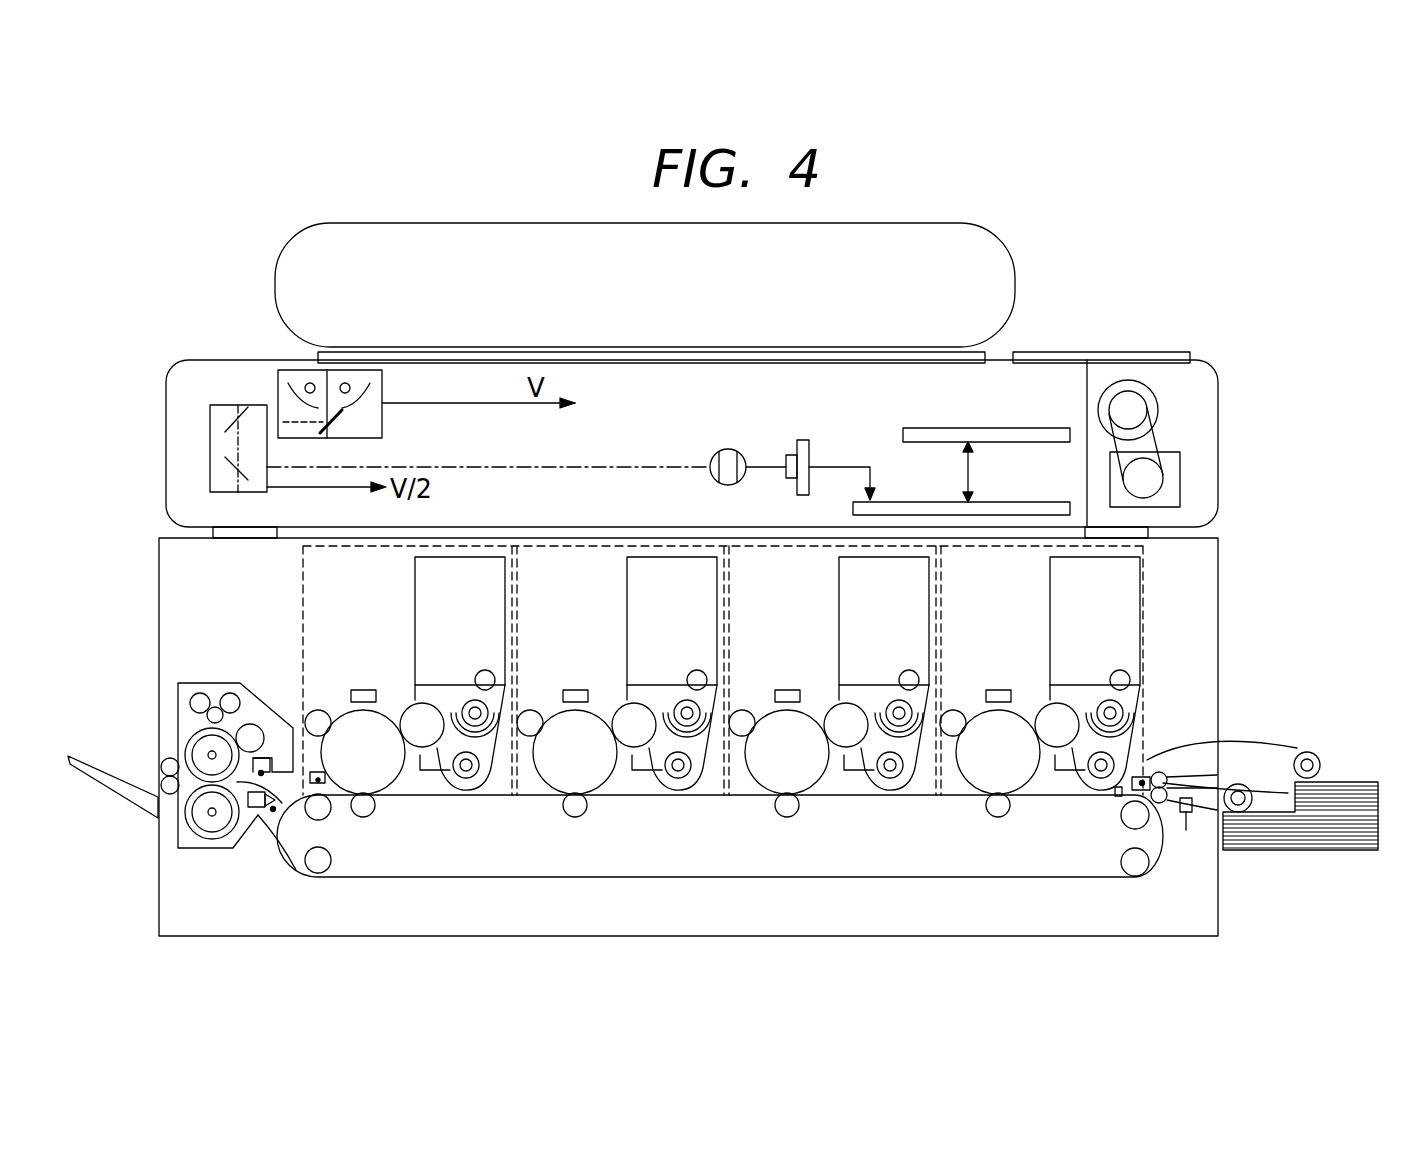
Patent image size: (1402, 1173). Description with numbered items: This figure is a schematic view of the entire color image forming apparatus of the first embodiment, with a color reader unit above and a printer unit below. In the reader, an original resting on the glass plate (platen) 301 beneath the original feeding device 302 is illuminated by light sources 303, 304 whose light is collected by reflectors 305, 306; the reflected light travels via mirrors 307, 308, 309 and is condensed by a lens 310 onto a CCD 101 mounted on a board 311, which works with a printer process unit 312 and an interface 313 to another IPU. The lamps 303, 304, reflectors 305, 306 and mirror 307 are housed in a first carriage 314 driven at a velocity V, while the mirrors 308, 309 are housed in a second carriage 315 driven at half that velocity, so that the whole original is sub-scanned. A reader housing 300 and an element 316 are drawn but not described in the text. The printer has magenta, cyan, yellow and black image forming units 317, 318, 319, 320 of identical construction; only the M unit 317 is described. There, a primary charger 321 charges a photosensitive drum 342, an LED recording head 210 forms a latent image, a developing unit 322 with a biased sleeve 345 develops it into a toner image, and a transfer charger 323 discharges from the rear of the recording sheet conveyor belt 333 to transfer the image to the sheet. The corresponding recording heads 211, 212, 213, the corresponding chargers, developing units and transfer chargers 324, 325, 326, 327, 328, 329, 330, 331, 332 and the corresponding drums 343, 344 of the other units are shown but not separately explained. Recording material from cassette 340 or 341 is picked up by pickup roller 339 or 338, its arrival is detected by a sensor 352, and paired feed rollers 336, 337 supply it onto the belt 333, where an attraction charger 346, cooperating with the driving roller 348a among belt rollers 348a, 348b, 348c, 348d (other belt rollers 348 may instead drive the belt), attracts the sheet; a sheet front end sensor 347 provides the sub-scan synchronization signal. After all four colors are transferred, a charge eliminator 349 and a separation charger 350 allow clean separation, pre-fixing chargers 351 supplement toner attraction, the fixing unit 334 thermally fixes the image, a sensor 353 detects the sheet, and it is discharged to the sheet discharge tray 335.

The CCD 101 is at (790, 454).
The LED recording head 210 is at (998, 689).
The exposure unit 211 is at (787, 689).
The exposure unit 212 is at (575, 689).
The exposure unit 213 is at (363, 689).
The image reader housing 300 is at (1120, 350).
The glass plate (platen) 301 is at (447, 351).
The original feeding device 302 is at (1010, 262).
The light source 303 is at (346, 382).
The light source 304 is at (310, 382).
The reflector 305 is at (378, 391).
The reflector 306 is at (281, 395).
The mirror 307 is at (345, 437).
The mirror 308 is at (210, 418).
The mirror 309 is at (210, 478).
The lens 310 is at (728, 449).
The board 311 is at (810, 446).
The printer process unit 312 is at (1050, 501).
The interface (I/F) 313 is at (1050, 427).
The first carriage 314 is at (382, 422).
The second carriage 315 is at (210, 450).
The drive unit 316 is at (1220, 400).
The magenta (M) image forming unit 317 is at (1143, 600).
The cyan (C) image forming unit 318 is at (766, 545).
The yellow (Y) image forming unit 319 is at (656, 545).
The black (K) image forming unit 320 is at (488, 545).
The primary charger 321 is at (953, 709).
The developing unit 322 is at (1050, 600).
The transfer charger 323 is at (999, 818).
The charging roller 324 is at (742, 709).
The toner cartridge 325 is at (839, 600).
The transfer roller 326 is at (788, 818).
The charging roller 327 is at (530, 709).
The toner cartridge 328 is at (627, 600).
The transfer roller 329 is at (576, 818).
The charging roller 330 is at (318, 709).
The toner cartridge 331 is at (415, 600).
The transfer roller 332 is at (364, 818).
The recording sheet conveyor belt 333 is at (480, 878).
The fixing unit 334 is at (205, 683).
The sheet discharge tray 335 is at (112, 770).
The feed roller 336 is at (1163, 778).
The feed roller 337 is at (1160, 803).
The pickup roller 338 is at (1240, 812).
The pickup roller 339 is at (1312, 752).
The cassette 340 is at (1360, 851).
The cassette 341 is at (1360, 781).
The photosensitive drum 342 is at (983, 778).
The photosensitive drum 343 is at (772, 778).
The photosensitive drum 344 is at (560, 778).
The sleeve 345 is at (341, 797).
The attraction charger 346 is at (835, 710).
The sheet front end sensor 347 is at (623, 710).
The belt rollers 348 is at (411, 710).
The belt roller (driving roller) 348a is at (1130, 815).
The belt roller 348b is at (1130, 862).
The belt roller 348c is at (307, 820).
The belt roller 348d is at (323, 866).
The charge eliminator 349 is at (305, 790).
The separation charger 350 is at (262, 812).
The pre-fixing charger 351 is at (262, 757).
The sensor 352 is at (1186, 830).
The sensor 353 is at (248, 822).